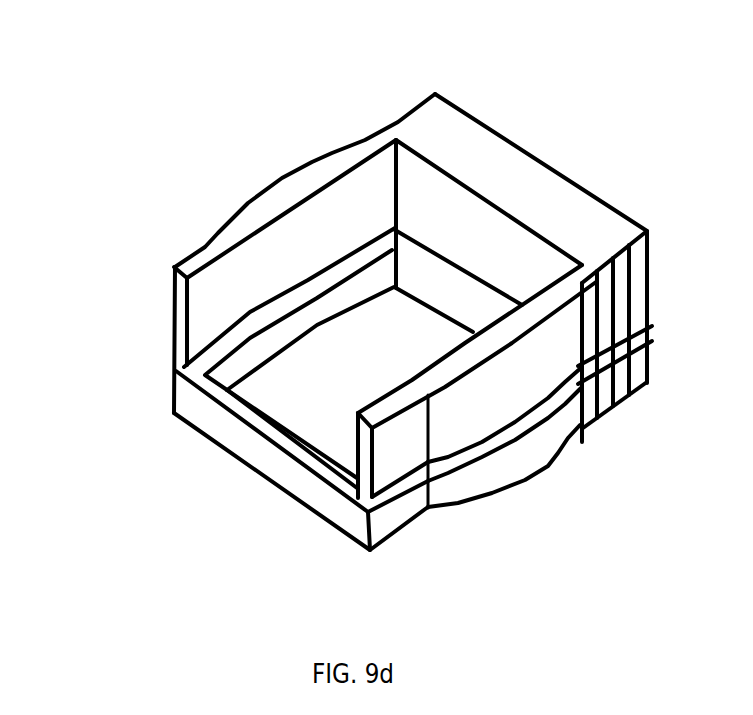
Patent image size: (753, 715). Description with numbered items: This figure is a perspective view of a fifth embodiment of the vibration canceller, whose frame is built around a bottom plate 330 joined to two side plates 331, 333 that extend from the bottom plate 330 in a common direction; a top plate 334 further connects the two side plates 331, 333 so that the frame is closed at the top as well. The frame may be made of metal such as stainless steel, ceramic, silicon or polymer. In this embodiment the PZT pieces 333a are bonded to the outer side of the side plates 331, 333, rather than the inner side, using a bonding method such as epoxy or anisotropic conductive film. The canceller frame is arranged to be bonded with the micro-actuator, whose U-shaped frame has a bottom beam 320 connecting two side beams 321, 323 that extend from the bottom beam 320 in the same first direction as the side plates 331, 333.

The bottom beam 320 is at (367, 228).
The side beam 321 is at (298, 252).
The side beam 323 is at (443, 353).
The bottom plate 330 is at (309, 283).
The side plate 331 is at (213, 350).
The side plate 333 is at (405, 517).
The PZT piece 333a is at (538, 455).
The top plate 334 is at (384, 481).